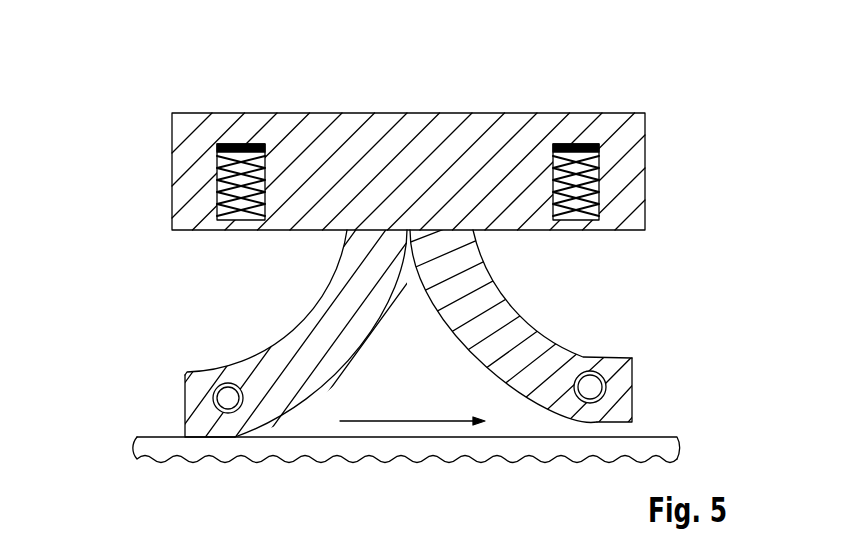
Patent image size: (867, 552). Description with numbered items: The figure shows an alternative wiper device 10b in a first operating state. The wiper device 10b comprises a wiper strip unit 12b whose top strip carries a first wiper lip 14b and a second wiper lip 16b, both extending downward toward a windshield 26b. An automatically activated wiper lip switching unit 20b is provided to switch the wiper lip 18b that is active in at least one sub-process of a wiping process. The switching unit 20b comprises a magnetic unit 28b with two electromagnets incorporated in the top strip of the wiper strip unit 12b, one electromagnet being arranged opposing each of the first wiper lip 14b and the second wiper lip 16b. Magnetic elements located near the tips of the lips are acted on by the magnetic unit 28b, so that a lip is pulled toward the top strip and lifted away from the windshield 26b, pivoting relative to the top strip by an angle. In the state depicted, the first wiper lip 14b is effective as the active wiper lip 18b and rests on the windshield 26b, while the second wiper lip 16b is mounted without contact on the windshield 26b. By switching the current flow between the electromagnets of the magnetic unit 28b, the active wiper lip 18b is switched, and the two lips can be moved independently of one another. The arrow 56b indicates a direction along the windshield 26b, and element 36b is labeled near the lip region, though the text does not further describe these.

The wiper device 10b is at (168, 58).
The wiper strip unit 12b is at (378, 130).
The first wiper lip 14b is at (198, 380).
The second wiper lip 16b is at (617, 372).
The active wiper lip 18b is at (215, 378).
The automatically activated wiper lip switching unit 20b is at (260, 133).
The windshield 26b is at (497, 455).
The magnetic unit 28b is at (232, 132).
The arm 36b is at (690, 88).
The direction of movement 56b is at (404, 418).